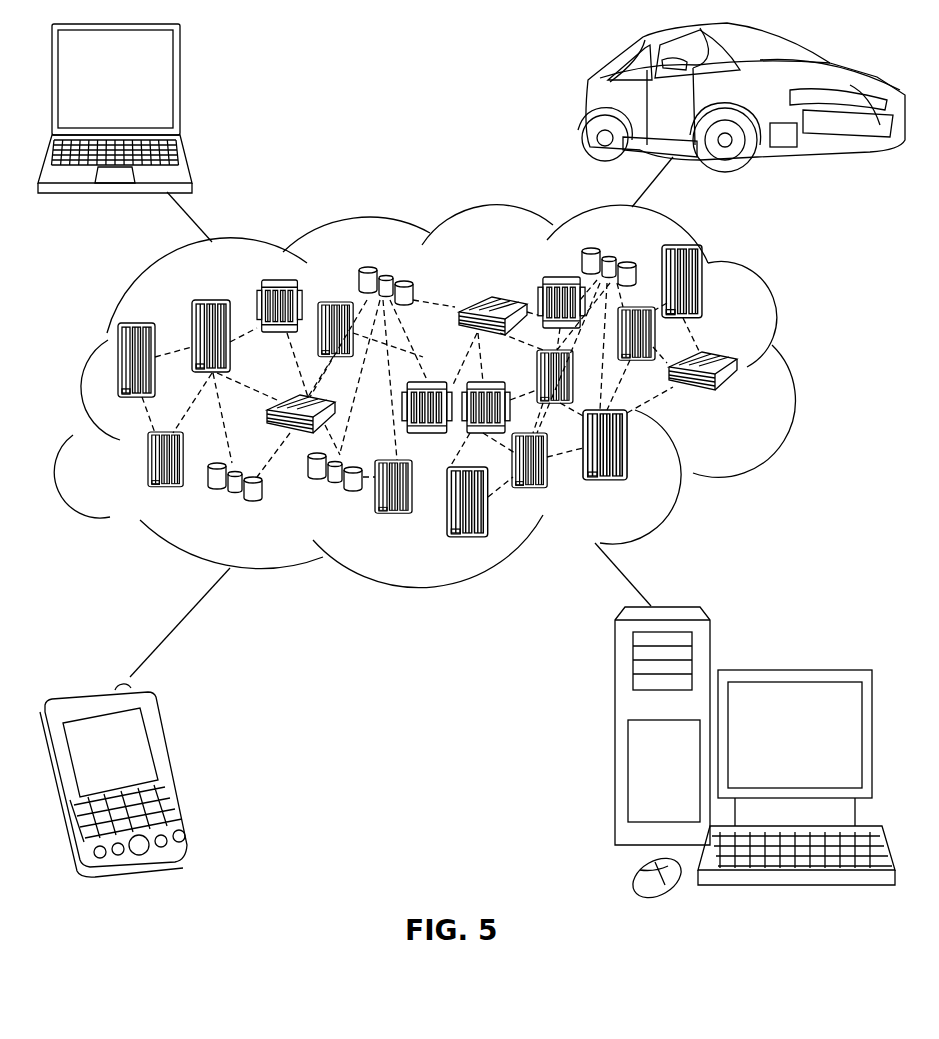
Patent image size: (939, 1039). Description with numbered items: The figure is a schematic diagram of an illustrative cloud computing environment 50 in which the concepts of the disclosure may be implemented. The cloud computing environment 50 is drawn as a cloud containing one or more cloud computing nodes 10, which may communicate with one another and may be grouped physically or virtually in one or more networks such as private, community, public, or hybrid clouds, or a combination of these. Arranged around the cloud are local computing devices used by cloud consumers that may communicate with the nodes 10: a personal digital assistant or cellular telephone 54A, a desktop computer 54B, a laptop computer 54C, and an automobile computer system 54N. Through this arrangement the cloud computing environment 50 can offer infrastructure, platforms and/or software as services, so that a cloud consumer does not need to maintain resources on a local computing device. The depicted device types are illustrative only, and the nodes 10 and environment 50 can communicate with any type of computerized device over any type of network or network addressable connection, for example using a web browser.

The cloud computing node 10 is at (738, 403).
The cloud computing environment 50 is at (790, 367).
The personal digital assistant or cellular telephone 54A is at (171, 762).
The desktop computer 54B is at (792, 668).
The laptop computer 54C is at (180, 85).
The automobile computer system 54N is at (590, 105).